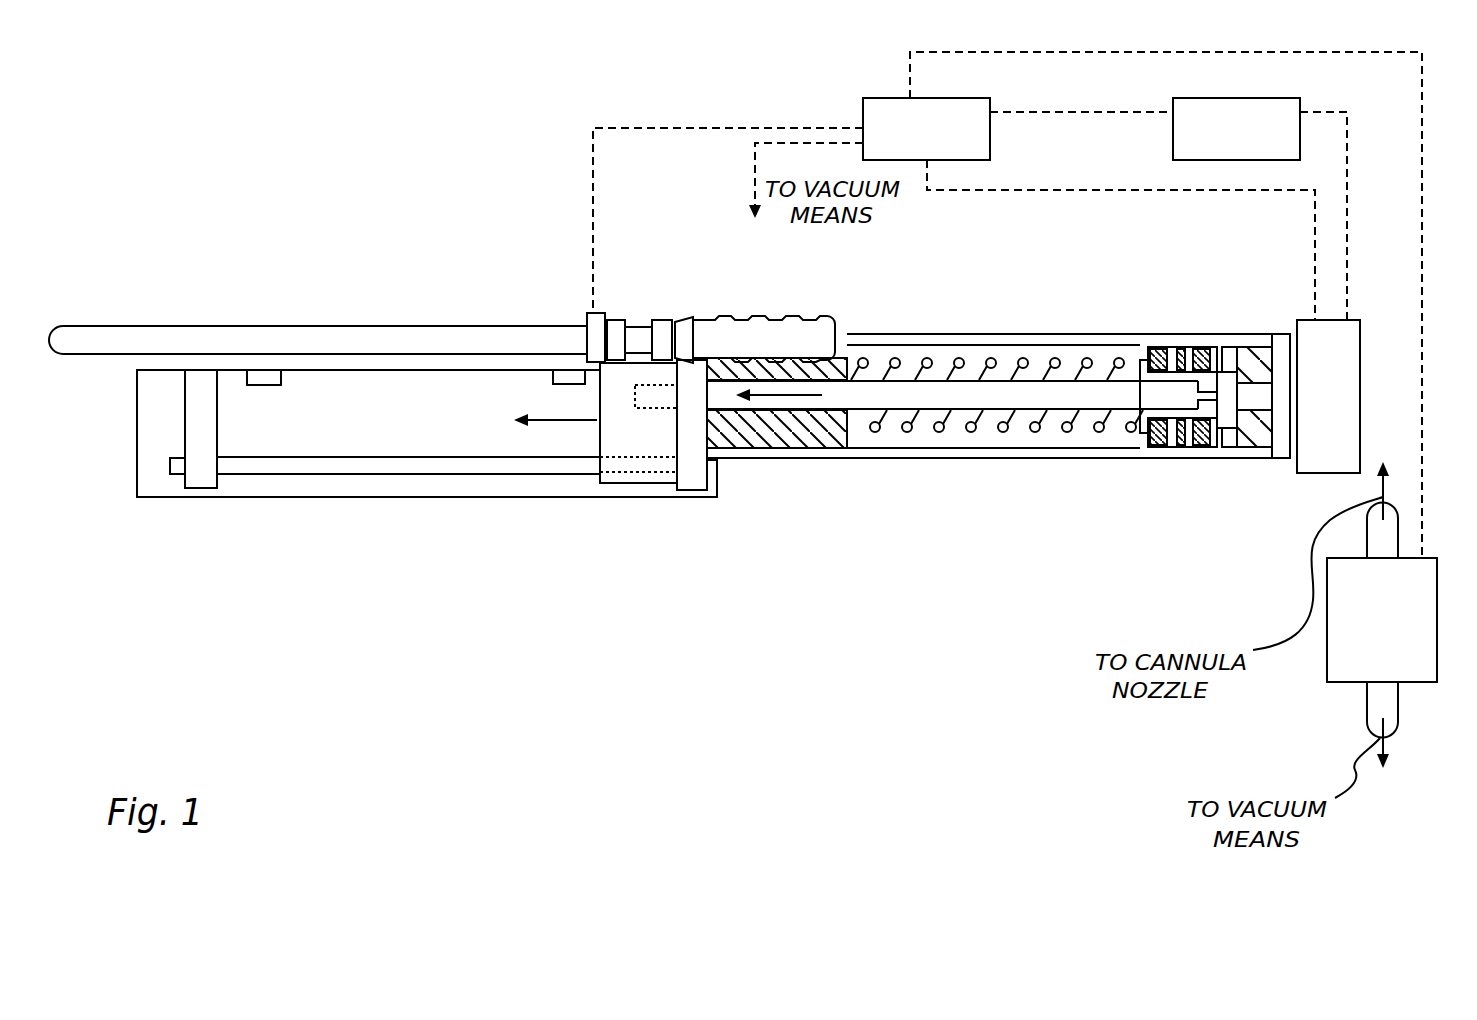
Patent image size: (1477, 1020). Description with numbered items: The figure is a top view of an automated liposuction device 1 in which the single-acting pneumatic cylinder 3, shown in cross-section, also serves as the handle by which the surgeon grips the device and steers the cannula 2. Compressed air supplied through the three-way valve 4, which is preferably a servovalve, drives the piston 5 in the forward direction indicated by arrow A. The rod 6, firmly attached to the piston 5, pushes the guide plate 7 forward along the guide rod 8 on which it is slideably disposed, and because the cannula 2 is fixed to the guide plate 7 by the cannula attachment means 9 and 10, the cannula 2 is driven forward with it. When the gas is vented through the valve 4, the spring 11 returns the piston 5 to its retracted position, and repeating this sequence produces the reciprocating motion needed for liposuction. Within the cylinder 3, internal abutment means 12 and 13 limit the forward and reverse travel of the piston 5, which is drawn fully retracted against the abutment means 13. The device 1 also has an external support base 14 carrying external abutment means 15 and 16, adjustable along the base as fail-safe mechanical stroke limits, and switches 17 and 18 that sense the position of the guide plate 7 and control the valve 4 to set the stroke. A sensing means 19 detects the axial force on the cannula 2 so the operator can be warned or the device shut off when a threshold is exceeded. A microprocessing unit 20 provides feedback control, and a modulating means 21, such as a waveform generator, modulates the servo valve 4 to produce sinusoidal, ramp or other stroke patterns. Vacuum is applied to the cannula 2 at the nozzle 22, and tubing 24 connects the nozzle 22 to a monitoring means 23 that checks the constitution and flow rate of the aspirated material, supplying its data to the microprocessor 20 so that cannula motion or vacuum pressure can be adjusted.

The device 1 is at (784, 554).
The cannula 2 is at (155, 326).
The single-acting pneumatic cylinder 3 is at (983, 334).
The three-way valve 4 is at (1317, 475).
The piston 5 is at (1148, 347).
The rod 6 is at (1062, 433).
The guide plate 7 is at (612, 485).
The guide rod 8 is at (413, 480).
The cannula attachment means 9 is at (650, 320).
The cannula attachment means 10 is at (675, 318).
The spring 11 is at (945, 433).
The internal abutment means 12 is at (847, 433).
The internal abutment means 13 is at (1213, 447).
The external support base 14 is at (340, 497).
The external abutment means 15 is at (197, 490).
The external abutment means 16 is at (690, 490).
The switch 17 is at (267, 372).
The switch 18 is at (565, 370).
The force sensing means 19 is at (600, 312).
The microprocessing unit 20 is at (990, 138).
The modulating means 21 is at (1230, 160).
The nozzle 22 is at (846, 328).
The monitoring means 23 is at (1335, 642).
The tubing 24 is at (1388, 537).
The arrow A is at (775, 398).